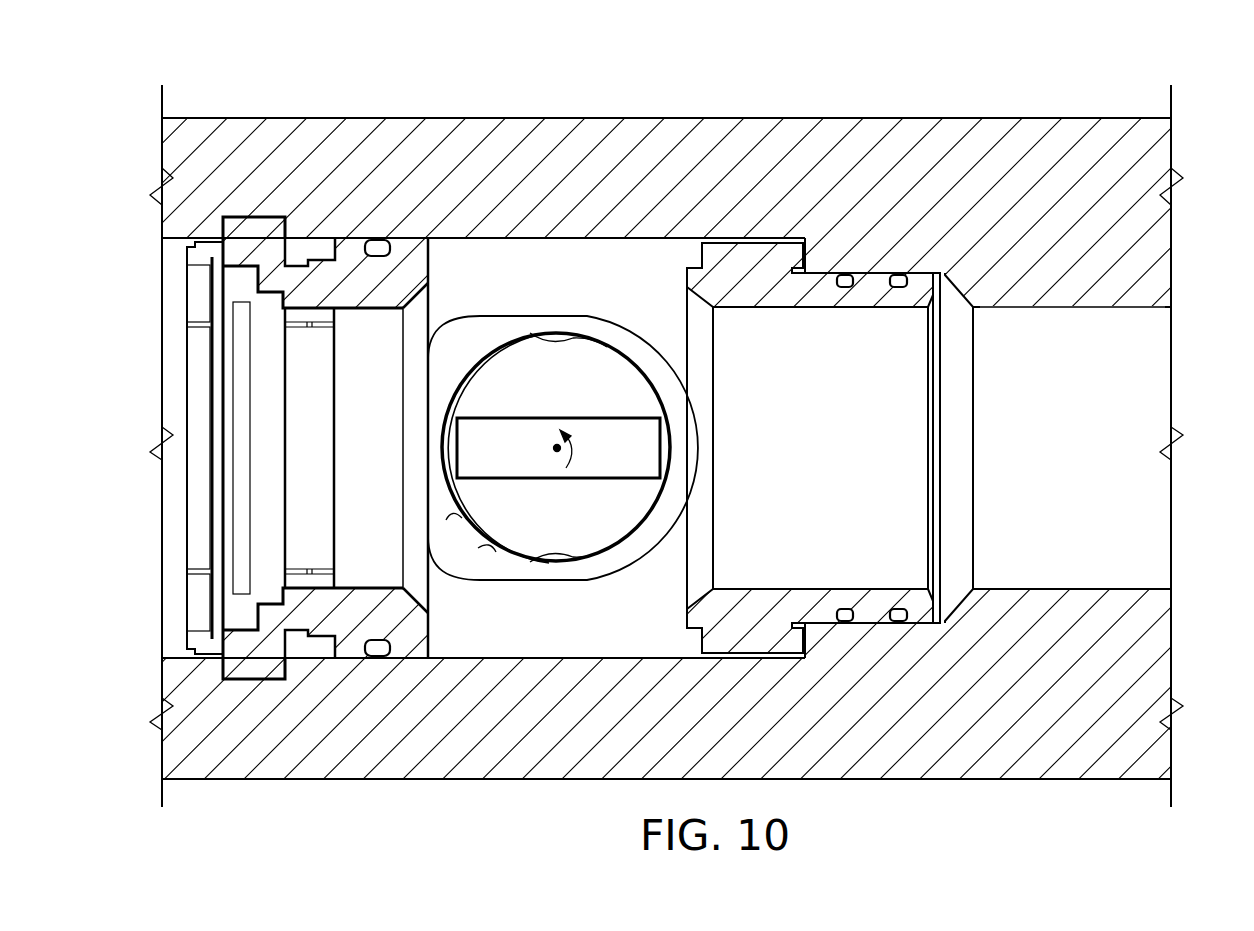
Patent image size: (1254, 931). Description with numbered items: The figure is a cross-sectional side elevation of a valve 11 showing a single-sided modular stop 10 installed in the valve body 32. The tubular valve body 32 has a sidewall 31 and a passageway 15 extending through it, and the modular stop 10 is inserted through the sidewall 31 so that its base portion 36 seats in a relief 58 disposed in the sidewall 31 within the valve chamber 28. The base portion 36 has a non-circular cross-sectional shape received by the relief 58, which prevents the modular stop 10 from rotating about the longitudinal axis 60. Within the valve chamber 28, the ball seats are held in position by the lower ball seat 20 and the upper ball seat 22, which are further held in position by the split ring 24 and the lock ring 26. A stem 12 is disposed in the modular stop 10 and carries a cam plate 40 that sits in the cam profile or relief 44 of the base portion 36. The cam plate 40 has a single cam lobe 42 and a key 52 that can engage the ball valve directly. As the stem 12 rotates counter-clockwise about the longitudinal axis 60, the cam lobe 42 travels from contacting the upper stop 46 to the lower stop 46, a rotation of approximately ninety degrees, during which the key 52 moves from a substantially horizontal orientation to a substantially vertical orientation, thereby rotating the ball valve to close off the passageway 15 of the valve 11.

The modular stop 10 is at (563, 351).
The valve 11 is at (974, 107).
The stem 12 is at (556, 351).
The passageway 15 is at (1140, 374).
The lower ball seat 20 is at (745, 263).
The upper ball seat 22 is at (340, 260).
The split ring 24 is at (267, 230).
The lock ring 26 is at (236, 283).
The valve chamber 28 is at (443, 257).
The sidewall 31 is at (671, 328).
The valve body 32 is at (875, 130).
The base portion 36 is at (480, 330).
The cam plate 40 is at (590, 373).
The cam lobe 42 is at (505, 360).
The cam profile or relief 44 is at (455, 518).
The stops 46 is at (530, 330).
The key 52 is at (585, 470).
The relief 58 is at (622, 578).
The longitudinal axis 60 is at (557, 450).